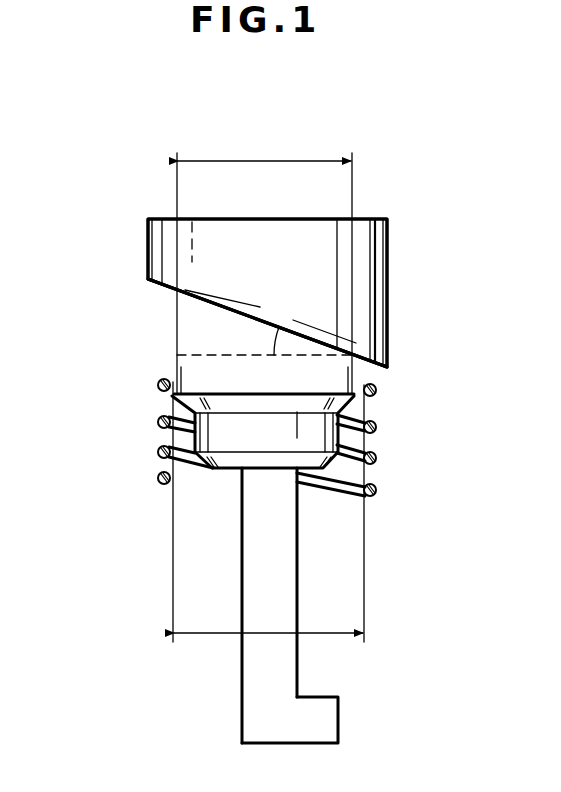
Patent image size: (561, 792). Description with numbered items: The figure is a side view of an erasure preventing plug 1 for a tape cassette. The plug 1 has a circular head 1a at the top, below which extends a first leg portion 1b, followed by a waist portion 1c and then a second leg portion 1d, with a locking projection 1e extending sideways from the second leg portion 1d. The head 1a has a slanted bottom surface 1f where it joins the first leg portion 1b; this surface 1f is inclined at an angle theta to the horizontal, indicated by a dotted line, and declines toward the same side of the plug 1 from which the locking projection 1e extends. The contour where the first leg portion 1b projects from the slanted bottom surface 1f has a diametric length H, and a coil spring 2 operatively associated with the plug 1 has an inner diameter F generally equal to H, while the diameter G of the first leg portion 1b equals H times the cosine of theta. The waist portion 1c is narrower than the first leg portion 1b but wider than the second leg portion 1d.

The erasure preventing plug 1 is at (135, 220).
The circular head 1a is at (375, 302).
The first leg portion 1b is at (187, 333).
The waist portion 1c is at (323, 439).
The second leg portion 1d is at (285, 540).
The locking projection 1e is at (325, 720).
The slanted bottom surface 1f is at (153, 286).
The coil spring 2 is at (160, 384).